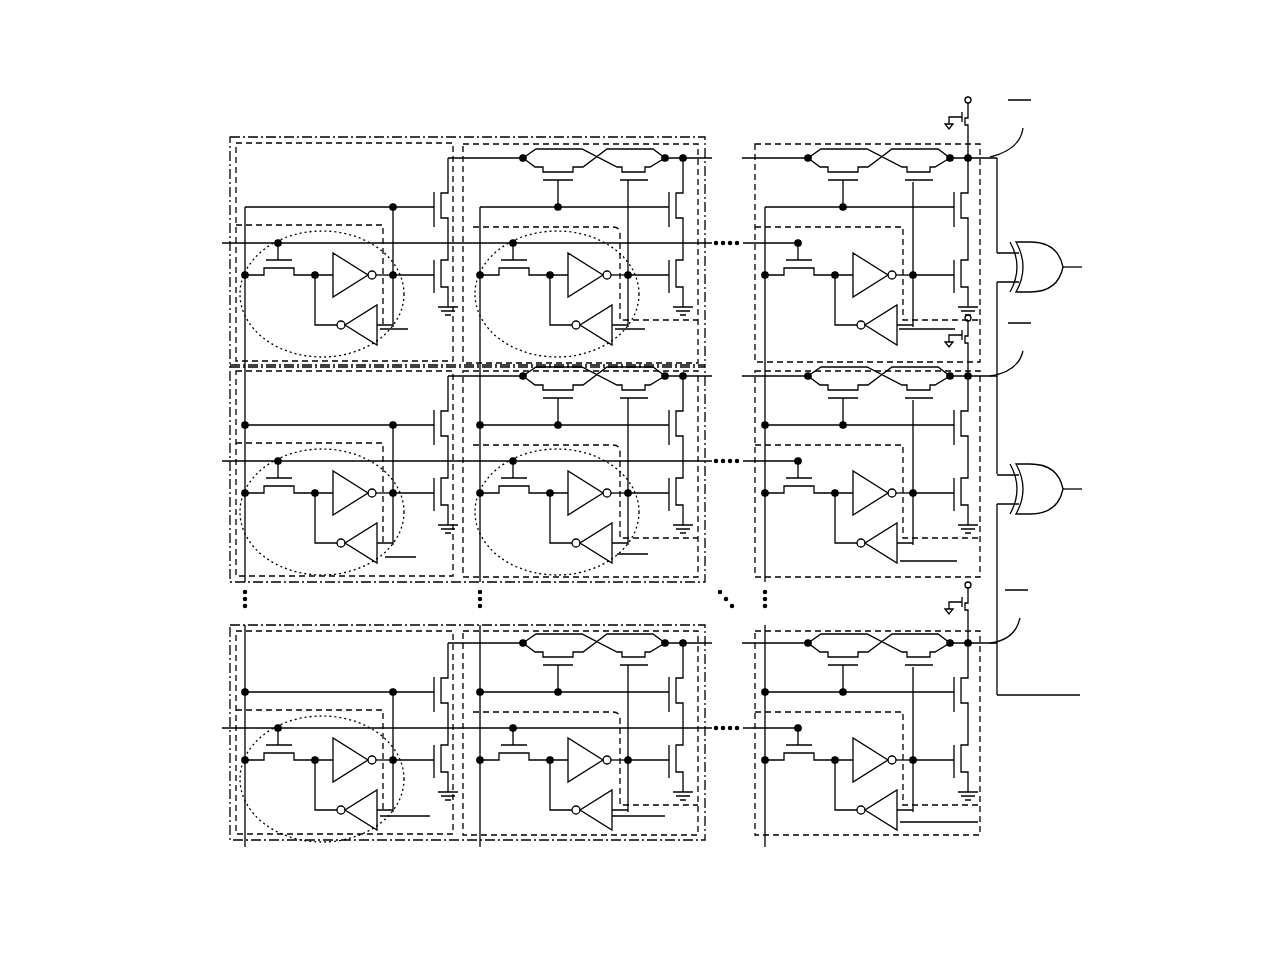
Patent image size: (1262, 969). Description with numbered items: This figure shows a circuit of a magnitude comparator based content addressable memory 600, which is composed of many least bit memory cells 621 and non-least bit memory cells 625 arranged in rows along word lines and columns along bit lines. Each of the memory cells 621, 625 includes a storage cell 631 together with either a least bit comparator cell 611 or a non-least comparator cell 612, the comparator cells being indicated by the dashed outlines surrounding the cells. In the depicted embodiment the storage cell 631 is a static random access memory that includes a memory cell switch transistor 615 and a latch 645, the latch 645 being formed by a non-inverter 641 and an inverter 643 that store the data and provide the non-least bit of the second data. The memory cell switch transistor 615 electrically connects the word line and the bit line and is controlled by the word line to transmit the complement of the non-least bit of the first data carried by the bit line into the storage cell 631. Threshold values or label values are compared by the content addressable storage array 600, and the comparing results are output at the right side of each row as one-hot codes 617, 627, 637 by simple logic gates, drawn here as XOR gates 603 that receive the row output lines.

The magnitude comparator based content addressable memory 600 is at (663, 478).
The XOR gate 603 is at (1033, 250).
The least bit comparator cell 611 is at (266, 140).
The non-least comparator cell 612 is at (517, 143).
The memory cell switch transistor 615 is at (266, 285).
The one-hot code 617 is at (1082, 267).
The least bit memory cell 621 is at (230, 168).
The non-least bit memory cell 625 is at (595, 138).
The one-hot code 627 is at (1082, 489).
The storage cell 631 is at (257, 333).
The one-hot code 637 is at (1082, 695).
The non-inverter 641 is at (352, 262).
The inverter 643 is at (352, 303).
The latch 645 is at (261, 466).